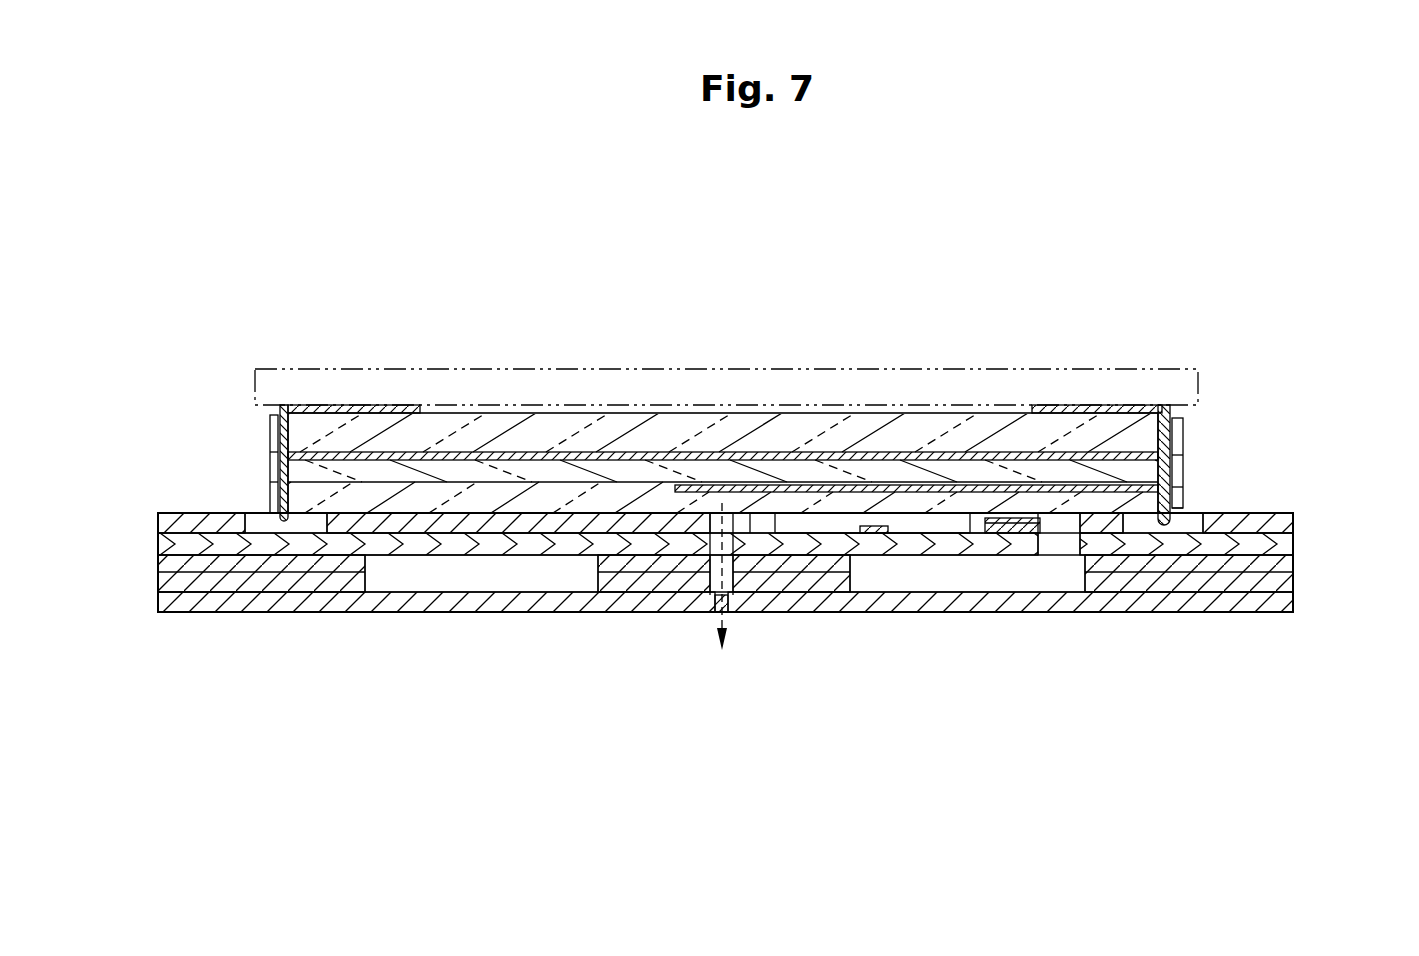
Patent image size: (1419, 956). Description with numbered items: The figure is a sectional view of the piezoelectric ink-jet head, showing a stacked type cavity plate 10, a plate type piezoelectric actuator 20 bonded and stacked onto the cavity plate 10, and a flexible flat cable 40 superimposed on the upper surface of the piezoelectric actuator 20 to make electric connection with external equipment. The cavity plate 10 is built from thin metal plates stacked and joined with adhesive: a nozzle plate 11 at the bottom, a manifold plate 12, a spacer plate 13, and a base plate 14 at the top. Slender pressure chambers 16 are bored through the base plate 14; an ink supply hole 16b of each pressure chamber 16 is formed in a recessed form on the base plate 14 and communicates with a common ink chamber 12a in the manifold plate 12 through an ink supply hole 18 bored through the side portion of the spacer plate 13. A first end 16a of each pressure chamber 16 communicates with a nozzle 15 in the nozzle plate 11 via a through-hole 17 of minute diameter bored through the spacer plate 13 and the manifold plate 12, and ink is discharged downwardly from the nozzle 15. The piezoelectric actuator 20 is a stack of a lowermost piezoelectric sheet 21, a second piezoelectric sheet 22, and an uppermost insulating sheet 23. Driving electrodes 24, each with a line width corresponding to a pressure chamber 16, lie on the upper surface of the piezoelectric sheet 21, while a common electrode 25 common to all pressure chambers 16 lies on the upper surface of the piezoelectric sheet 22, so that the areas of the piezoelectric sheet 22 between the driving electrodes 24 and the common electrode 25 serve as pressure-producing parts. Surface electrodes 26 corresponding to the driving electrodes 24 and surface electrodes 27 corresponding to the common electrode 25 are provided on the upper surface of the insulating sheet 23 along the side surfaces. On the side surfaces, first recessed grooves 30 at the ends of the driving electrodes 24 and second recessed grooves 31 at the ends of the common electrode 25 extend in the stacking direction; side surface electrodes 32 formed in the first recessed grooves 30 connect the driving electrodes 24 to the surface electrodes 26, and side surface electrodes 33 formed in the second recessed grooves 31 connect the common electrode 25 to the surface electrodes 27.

The cavity plate 10 is at (1300, 558).
The nozzle plate 11 is at (332, 600).
The manifold plate 12 is at (198, 565).
The common ink chamber 12a is at (482, 582).
The spacer plate 13 is at (163, 543).
The base plate 14 is at (180, 514).
The nozzle 15 is at (718, 620).
The pressure chamber 16 is at (933, 528).
The first end of pressure chamber 16a is at (743, 517).
The ink supply hole 16b is at (1057, 523).
The through-hole 17 is at (727, 567).
The ink supply hole of spacer plate 18 is at (1057, 545).
The piezoelectric actuator 20 is at (1202, 436).
The piezoelectric sheet 21 is at (537, 497).
The piezoelectric sheet 22 is at (627, 467).
The insulating sheet 23 is at (453, 423).
The driving electrode 24 is at (820, 490).
The common electrode 25 is at (697, 455).
The surface electrode 26 is at (1083, 413).
The surface electrode 27 is at (353, 406).
The first recessed groove 30 is at (1183, 470).
The second recessed groove 31 is at (270, 432).
The side surface electrode 32 is at (1183, 503).
The side surface electrode 33 is at (270, 465).
The flexible flat cable 40 is at (1168, 366).